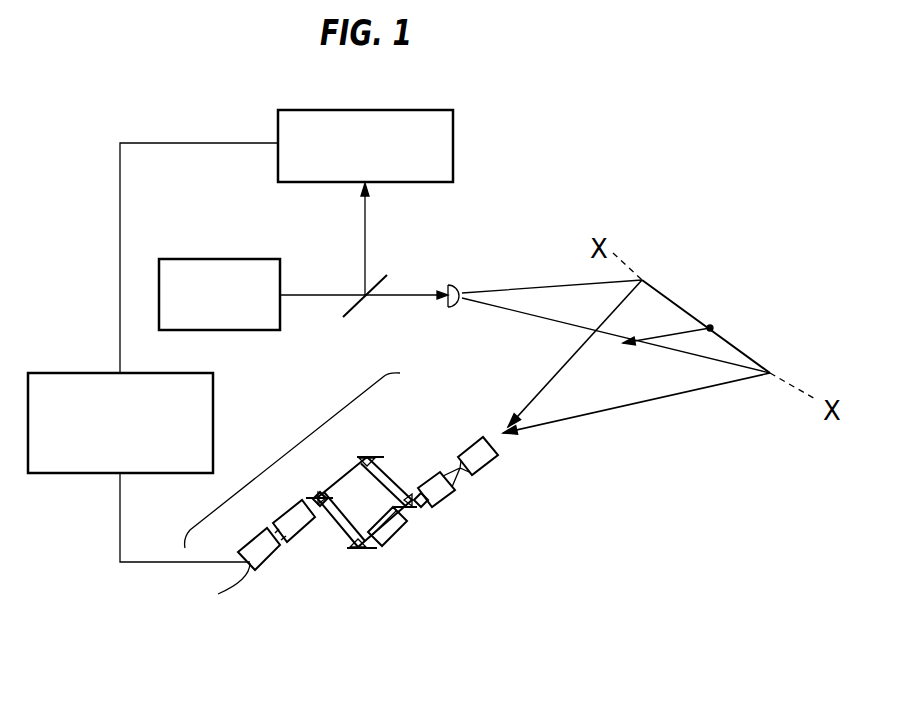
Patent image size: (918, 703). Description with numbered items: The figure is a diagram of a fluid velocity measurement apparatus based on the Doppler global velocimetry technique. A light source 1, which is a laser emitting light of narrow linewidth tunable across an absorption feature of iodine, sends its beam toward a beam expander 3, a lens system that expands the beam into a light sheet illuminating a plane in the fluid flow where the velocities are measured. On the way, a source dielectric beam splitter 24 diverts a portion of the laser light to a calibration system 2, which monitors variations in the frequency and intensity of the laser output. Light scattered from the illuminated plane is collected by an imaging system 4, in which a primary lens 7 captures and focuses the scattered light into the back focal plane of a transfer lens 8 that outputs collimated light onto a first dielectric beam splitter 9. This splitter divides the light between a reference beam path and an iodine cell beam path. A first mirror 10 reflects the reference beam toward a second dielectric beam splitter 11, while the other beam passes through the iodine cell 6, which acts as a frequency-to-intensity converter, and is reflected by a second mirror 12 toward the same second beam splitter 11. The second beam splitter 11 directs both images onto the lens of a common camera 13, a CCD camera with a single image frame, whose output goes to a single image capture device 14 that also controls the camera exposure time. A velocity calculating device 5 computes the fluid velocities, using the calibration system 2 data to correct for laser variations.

The light source 1 is at (189, 258).
The calibration system 2 is at (311, 109).
The beam expander 3 is at (450, 286).
The imaging system 4 is at (287, 449).
The velocity calculating device 5 is at (58, 372).
The iodine cell 6 is at (400, 540).
The primary lens 7 is at (478, 460).
The transfer lens 8 is at (440, 497).
The first dielectric beam splitter 9 is at (423, 510).
The first mirror 10 is at (370, 455).
The second dielectric beam splitter 11 is at (316, 489).
The second mirror 12 is at (362, 550).
The camera 13 is at (293, 530).
The image capture device 14 is at (248, 547).
The source dielectric beam splitter 24 is at (363, 308).